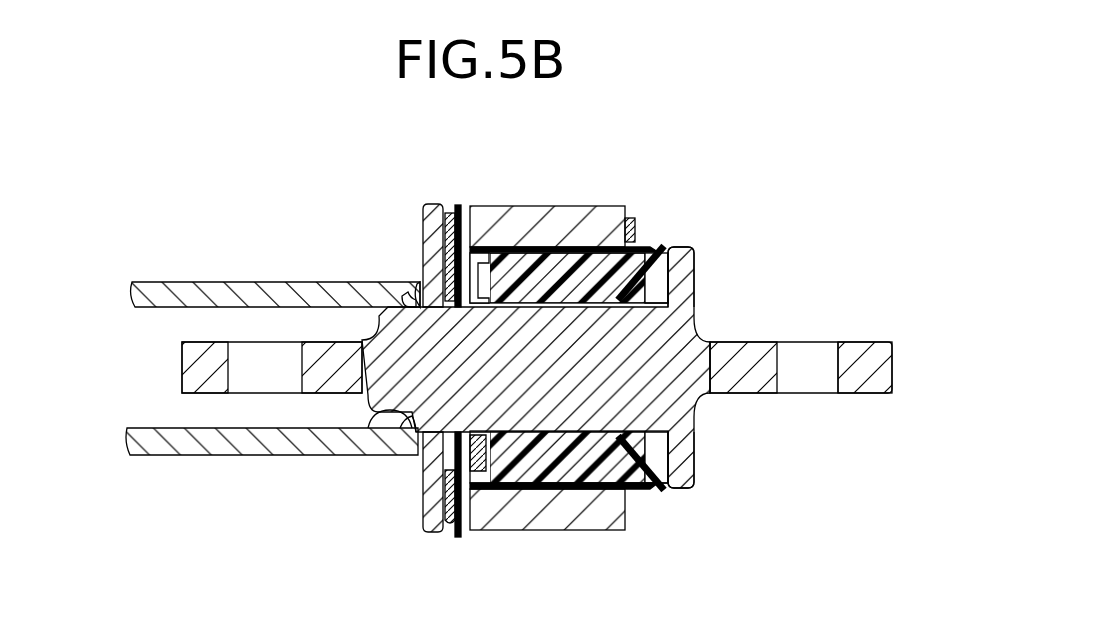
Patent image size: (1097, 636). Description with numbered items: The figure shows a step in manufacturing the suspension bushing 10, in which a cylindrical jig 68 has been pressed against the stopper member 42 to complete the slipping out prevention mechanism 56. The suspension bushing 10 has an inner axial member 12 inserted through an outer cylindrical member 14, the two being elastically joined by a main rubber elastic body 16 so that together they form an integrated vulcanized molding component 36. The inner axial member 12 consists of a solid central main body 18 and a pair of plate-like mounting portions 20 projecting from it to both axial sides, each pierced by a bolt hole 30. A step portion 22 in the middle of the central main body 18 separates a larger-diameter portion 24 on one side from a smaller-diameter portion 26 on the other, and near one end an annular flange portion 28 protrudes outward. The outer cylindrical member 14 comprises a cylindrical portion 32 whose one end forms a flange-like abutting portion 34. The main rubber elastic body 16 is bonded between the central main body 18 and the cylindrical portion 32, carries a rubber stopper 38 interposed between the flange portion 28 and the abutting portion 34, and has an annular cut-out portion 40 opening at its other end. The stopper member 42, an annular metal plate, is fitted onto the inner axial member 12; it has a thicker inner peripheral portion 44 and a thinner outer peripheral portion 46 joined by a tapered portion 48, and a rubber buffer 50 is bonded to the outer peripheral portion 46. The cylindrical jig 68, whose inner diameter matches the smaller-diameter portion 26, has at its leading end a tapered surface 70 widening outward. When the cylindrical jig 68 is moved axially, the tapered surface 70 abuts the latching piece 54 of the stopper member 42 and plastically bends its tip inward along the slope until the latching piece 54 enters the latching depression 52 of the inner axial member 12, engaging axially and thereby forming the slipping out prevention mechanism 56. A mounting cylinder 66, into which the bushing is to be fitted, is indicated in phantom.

The suspension bushing 10 is at (700, 210).
The inner axial member 12 is at (713, 406).
The outer cylindrical member 14 is at (508, 492).
The main rubber elastic body 16 is at (588, 468).
The central main body 18 is at (498, 166).
The mounting portion 20 is at (205, 382).
The step portion 22 is at (459, 232).
The larger-diameter portion 24 is at (575, 372).
The smaller-diameter portion 26 is at (462, 350).
The flange portion 28 is at (690, 282).
The bolt hole 30 is at (302, 372).
The cylindrical portion 32 is at (594, 246).
The abutting portion 34 is at (628, 230).
The integrated vulcanized molding component 36 is at (672, 494).
The rubber stopper 38 is at (648, 268).
The cut-out portion 40 is at (476, 256).
The stopper member 42 is at (422, 203).
The inner peripheral portion 44 is at (432, 458).
The outer peripheral portion 46 is at (445, 232).
The tapered portion 48 is at (460, 480).
The rubber buffer 50 is at (450, 505).
The latching depression 52 is at (406, 430).
The latching piece 54 is at (404, 300).
The slipping out prevention mechanism 56 is at (372, 418).
The mounting cylinder 66 is at (545, 506).
The cylindrical jig 68 is at (276, 294).
The tapered surface 70 is at (418, 300).